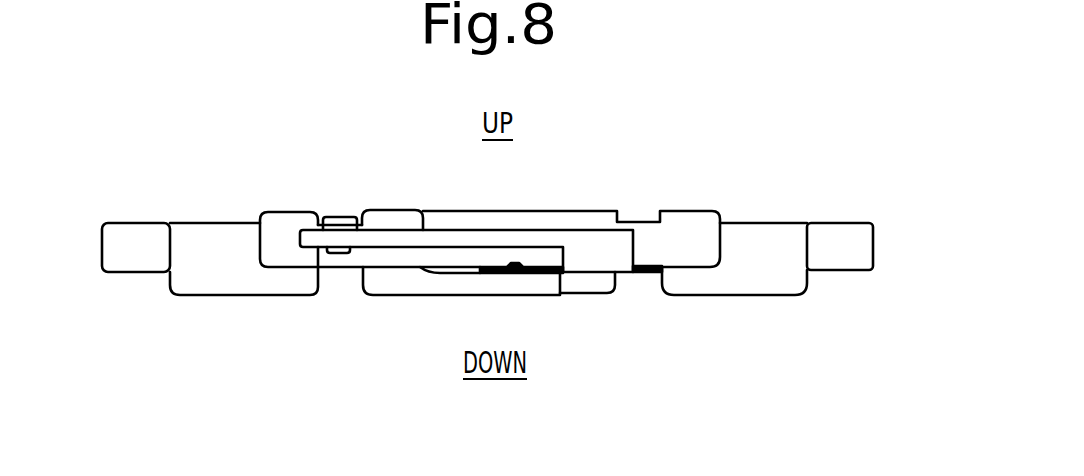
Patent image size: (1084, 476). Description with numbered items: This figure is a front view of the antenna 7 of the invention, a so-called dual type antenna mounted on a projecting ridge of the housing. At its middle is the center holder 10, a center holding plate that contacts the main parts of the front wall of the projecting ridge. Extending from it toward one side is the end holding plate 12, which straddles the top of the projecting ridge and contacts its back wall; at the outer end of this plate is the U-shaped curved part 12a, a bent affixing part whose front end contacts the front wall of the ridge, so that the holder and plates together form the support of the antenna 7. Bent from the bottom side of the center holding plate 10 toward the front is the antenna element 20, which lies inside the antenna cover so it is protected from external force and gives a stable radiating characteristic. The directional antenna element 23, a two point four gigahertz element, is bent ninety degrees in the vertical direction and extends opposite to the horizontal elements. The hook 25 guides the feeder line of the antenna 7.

The antenna 7 is at (668, 193).
The center holder 10 is at (558, 219).
The end holding plate 12 is at (772, 274).
The U-shaped curved part 12a is at (848, 204).
The antenna element 20 is at (629, 276).
The directional antenna element 23 is at (438, 237).
The hook 25 is at (352, 254).